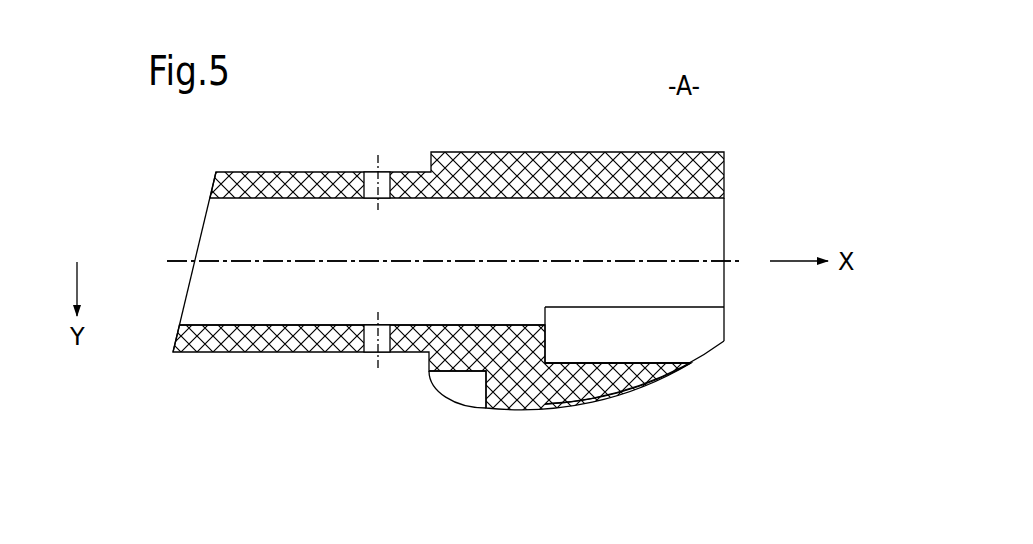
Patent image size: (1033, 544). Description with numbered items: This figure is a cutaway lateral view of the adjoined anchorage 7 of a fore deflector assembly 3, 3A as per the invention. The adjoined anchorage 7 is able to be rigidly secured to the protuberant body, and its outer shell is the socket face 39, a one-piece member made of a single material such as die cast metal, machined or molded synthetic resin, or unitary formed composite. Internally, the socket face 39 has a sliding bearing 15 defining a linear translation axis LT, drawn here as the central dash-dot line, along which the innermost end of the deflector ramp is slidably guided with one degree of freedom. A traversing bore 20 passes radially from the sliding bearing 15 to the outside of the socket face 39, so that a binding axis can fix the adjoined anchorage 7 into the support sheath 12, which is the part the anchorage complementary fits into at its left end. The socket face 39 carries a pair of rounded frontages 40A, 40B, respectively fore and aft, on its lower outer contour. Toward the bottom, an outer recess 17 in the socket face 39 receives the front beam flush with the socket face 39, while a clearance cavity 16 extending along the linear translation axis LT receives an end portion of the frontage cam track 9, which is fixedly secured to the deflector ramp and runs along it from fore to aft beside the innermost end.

The deflector assembly 3 is at (432, 282).
The deflector assembly 3A is at (466, 282).
The adjoined anchorage 7 is at (349, 243).
The socket face 39 is at (366, 294).
The frontage cam track 9 is at (632, 372).
The support sheath 12 is at (218, 353).
The sliding bearing 15 is at (215, 326).
The clearance cavity 16 is at (697, 333).
The outer recess 17 is at (472, 383).
The traversing bore 20 is at (374, 346).
The rounded frontage 40A is at (670, 383).
The rounded frontage 40B is at (447, 397).
The linear translation axis LT is at (233, 262).